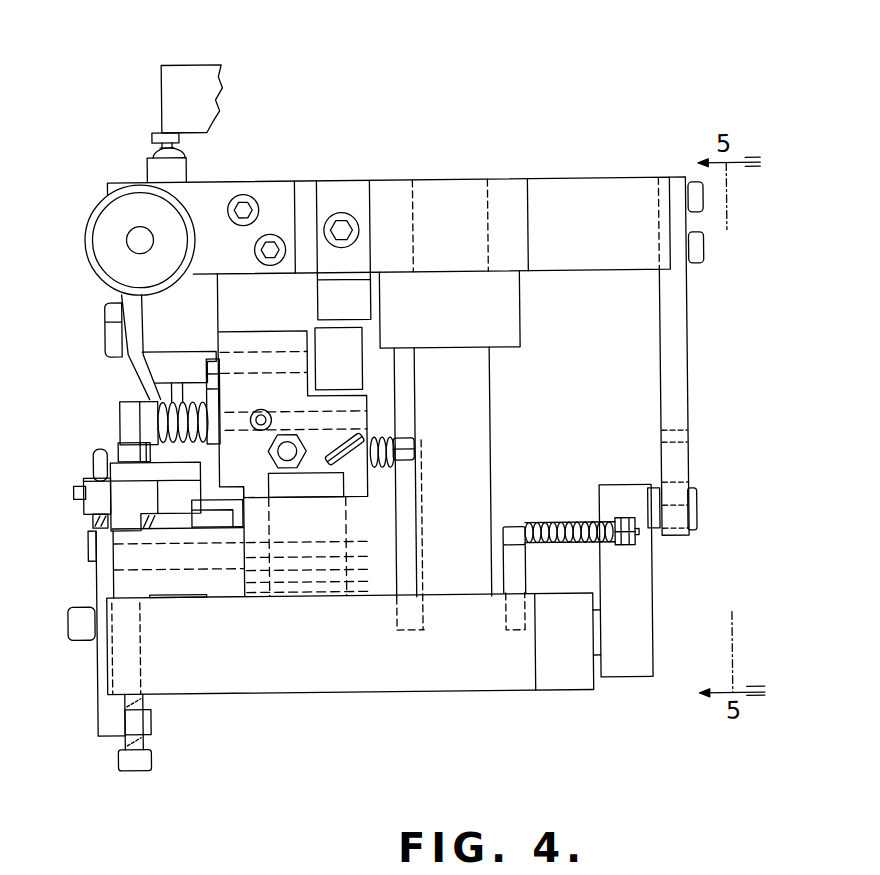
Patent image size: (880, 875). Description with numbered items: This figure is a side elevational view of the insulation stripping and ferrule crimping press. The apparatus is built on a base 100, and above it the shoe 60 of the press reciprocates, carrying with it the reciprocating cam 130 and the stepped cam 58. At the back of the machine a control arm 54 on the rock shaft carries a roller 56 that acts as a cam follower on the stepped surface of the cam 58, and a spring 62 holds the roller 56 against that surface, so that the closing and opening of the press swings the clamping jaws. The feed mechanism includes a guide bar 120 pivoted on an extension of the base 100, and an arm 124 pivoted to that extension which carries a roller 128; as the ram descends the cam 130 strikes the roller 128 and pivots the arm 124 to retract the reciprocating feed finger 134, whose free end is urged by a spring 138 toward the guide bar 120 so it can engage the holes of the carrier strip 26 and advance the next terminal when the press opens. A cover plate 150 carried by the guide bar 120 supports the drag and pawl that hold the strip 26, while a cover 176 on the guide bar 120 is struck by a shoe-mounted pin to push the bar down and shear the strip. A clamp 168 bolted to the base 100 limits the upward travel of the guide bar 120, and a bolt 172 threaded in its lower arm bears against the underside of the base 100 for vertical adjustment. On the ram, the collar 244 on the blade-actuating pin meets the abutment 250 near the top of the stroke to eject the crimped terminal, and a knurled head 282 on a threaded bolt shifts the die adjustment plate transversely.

The stop or abutment 250 is at (197, 75).
The collar 244 is at (183, 141).
The knurled head 282 is at (102, 207).
The shoe of the press 60 is at (578, 194).
The reciprocating cam 130 is at (334, 294).
The roller 128 is at (349, 344).
The arm 124 is at (367, 419).
The spring 138 is at (201, 408).
The reciprocating feed finger 134 is at (143, 396).
The carrier strip 26 is at (142, 520).
The cover plate 150 is at (117, 515).
The cover 176 is at (239, 521).
The guide bar 120 is at (123, 574).
The clamp 168 is at (97, 682).
The bolt 172 is at (145, 753).
The base 100 is at (367, 683).
The spring 62 is at (549, 525).
The control arm 54 is at (634, 578).
The roller 56 is at (694, 500).
The stepped cam 58 is at (681, 353).